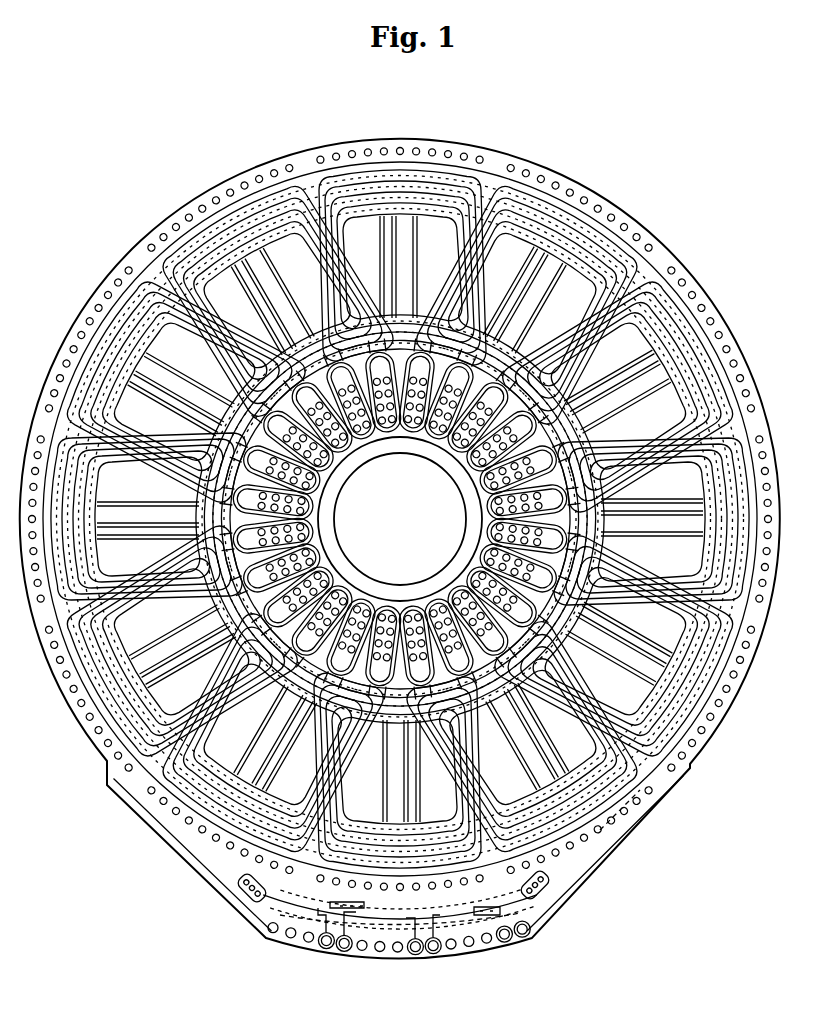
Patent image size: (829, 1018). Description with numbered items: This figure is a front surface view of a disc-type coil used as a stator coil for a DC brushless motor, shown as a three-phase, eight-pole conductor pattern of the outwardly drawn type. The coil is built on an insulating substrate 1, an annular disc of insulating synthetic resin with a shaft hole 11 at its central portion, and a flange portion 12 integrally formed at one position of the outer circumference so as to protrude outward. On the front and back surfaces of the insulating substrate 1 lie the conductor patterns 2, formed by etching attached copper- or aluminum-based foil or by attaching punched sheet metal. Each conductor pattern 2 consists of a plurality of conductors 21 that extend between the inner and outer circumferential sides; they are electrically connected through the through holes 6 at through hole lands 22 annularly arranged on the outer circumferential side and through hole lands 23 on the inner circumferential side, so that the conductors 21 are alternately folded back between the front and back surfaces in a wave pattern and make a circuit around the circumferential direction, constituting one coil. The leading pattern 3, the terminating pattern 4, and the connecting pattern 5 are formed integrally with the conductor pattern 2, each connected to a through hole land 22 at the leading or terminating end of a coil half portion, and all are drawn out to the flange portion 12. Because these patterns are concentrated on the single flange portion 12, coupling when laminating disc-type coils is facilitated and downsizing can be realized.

The insulating substrate 1 is at (667, 253).
The conductor pattern 2 is at (145, 242).
The leading pattern 3 is at (573, 887).
The terminating pattern 4 is at (272, 915).
The connecting pattern 5 is at (620, 830).
The through hole 6 is at (593, 198).
The shaft hole 11 is at (413, 534).
The flange portion 12 is at (245, 927).
The conductor 21 is at (692, 278).
The through hole land on the outer circumferential side 22 is at (100, 287).
The through hole land on the inner circumferential side 23 is at (346, 462).